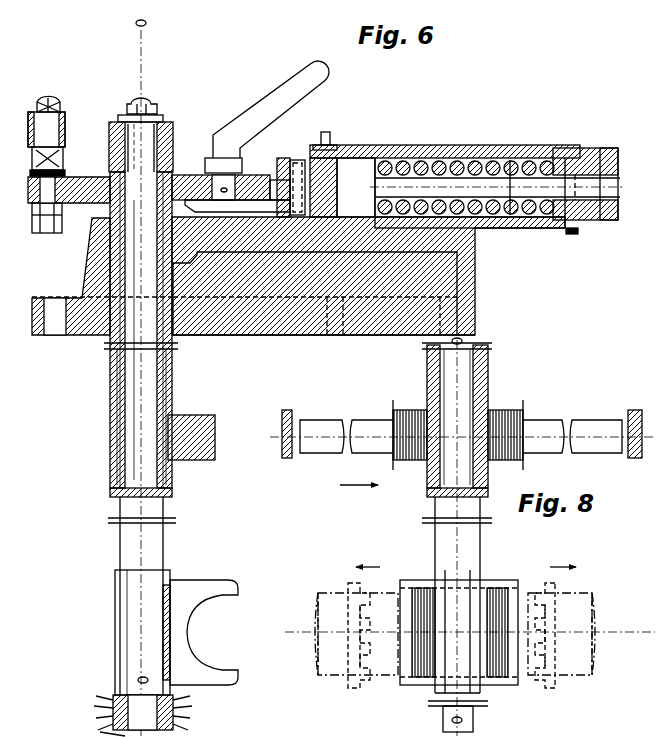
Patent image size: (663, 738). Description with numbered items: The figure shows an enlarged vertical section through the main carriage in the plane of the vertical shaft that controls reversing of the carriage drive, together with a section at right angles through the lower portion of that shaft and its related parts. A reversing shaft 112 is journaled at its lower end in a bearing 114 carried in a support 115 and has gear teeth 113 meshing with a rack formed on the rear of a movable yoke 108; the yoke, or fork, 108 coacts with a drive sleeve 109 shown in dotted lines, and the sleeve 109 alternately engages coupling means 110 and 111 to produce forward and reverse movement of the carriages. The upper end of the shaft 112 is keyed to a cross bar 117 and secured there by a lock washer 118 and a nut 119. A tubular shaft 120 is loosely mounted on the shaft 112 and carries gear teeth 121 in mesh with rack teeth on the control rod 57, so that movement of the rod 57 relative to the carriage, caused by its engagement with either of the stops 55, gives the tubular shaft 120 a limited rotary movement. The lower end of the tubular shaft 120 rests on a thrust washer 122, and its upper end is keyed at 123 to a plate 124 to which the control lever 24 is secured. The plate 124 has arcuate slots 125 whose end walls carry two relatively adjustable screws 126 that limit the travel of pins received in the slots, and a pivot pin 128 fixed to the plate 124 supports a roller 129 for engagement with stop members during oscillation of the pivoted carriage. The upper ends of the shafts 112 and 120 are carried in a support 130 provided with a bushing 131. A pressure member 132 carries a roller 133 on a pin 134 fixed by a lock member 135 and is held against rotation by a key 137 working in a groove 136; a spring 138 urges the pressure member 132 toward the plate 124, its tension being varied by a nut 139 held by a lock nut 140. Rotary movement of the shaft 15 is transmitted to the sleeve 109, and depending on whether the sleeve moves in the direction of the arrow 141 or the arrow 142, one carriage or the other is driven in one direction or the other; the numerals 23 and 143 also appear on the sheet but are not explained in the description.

In FIG. 8, the shaft 15 is at (461, 632).
In FIG. 6, the spindle 23 is at (276, 531).
In FIG. 6, the control lever 24 is at (326, 80).
In FIG. 8, the stops 55 is at (463, 434).
In FIG. 6, the control rod 57 is at (215, 433).
In FIG. 8, the control rod 57 is at (461, 436).
In FIG. 6, the yoke 108 is at (220, 596).
In FIG. 8, the yoke 108 is at (495, 582).
In FIG. 8, the drive sleeve 109 is at (384, 688).
In FIG. 8, the coupling means 110 is at (572, 688).
In FIG. 8, the coupling means 111 is at (356, 688).
In FIG. 6, the reversing shaft 112 is at (150, 230).
In FIG. 6, the gear teeth 113 is at (118, 606).
In FIG. 6, the bearing 114 is at (175, 690).
In FIG. 6, the support 115 is at (178, 712).
In FIG. 6, the cross bar 117 is at (173, 146).
In FIG. 6, the lock washer 118 is at (163, 118).
In FIG. 6, the nut 119 is at (150, 103).
In FIG. 6, the tubular shaft 120 is at (175, 347).
In FIG. 6, the gear teeth 121 is at (170, 410).
In FIG. 8, the gear teeth 121 is at (488, 402).
In FIG. 6, the thrust washer 122 is at (173, 492).
In FIG. 6, the key 123 is at (177, 180).
In FIG. 6, the plate 124 is at (237, 213).
In FIG. 6, the arcuate slots 125 is at (115, 716).
In FIG. 6, the adjustable screws 126 is at (87, 731).
In FIG. 6, the pivot pin 128 is at (62, 164).
In FIG. 6, the roller 129 is at (63, 141).
In FIG. 6, the support 130 is at (394, 250).
In FIG. 6, the bushing 131 is at (173, 268).
In FIG. 6, the pressure member 132 is at (342, 187).
In FIG. 6, the roller 133 is at (266, 203).
In FIG. 6, the pin 134 is at (298, 162).
In FIG. 6, the lock member 135 is at (279, 170).
In FIG. 6, the groove 136 is at (377, 160).
In FIG. 6, the key 137 is at (330, 143).
In FIG. 6, the spring 138 is at (460, 162).
In FIG. 6, the nut 139 is at (610, 220).
In FIG. 6, the lock nut 140 is at (572, 234).
In FIG. 8, the arrow 141 is at (545, 583).
In FIG. 8, the arrow 142 is at (398, 583).
In FIG. 8, the arrow 143 is at (358, 486).